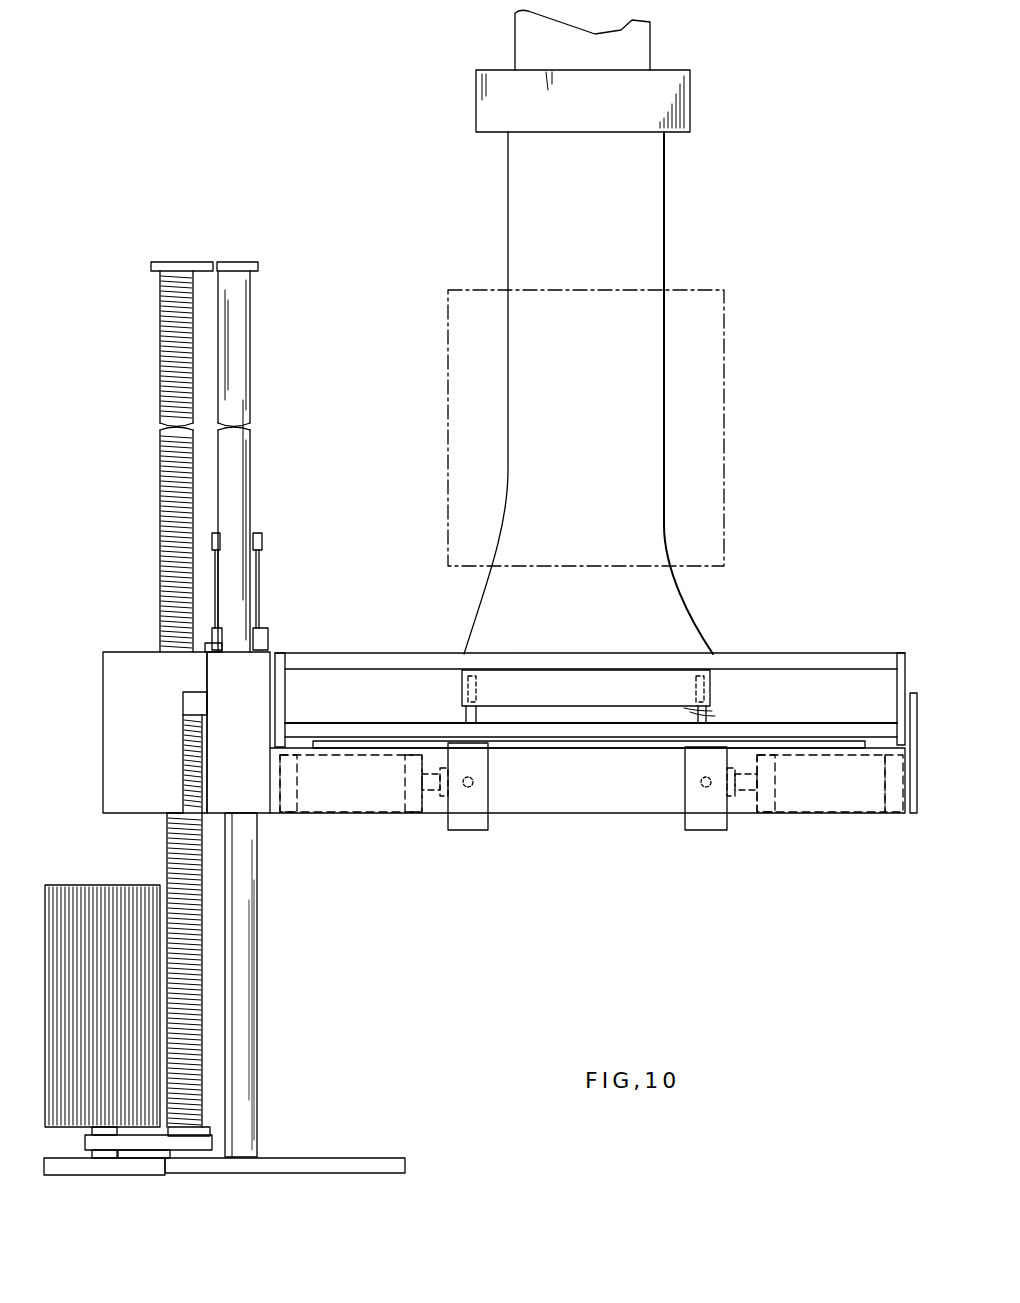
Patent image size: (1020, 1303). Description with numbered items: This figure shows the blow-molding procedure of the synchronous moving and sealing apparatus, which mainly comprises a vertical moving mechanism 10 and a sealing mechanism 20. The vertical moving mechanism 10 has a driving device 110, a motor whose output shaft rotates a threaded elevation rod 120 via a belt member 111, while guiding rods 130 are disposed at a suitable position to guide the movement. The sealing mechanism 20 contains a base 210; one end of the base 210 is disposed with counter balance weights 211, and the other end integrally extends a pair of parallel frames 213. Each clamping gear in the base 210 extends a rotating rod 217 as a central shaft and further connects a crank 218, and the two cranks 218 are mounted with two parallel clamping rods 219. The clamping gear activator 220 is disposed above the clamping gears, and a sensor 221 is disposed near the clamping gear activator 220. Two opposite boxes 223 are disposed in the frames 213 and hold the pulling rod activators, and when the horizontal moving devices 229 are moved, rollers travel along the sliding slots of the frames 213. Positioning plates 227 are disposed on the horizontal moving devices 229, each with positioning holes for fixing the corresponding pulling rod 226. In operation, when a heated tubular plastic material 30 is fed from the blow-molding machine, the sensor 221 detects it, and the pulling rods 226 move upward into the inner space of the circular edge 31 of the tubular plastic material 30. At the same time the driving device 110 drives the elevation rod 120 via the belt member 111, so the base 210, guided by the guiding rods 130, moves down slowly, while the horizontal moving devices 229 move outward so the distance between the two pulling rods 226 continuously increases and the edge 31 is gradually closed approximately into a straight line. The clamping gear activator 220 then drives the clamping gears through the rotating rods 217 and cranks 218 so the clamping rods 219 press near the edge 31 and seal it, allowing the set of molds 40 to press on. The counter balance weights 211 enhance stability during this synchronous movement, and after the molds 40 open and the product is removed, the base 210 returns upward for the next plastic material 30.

The vertical moving mechanism 10 is at (100, 825).
The sealing mechanism 20 is at (325, 618).
The tubular plastic material 30 is at (695, 598).
The circular edge 31 is at (712, 716).
The molds 40 is at (724, 382).
The driving device 110 is at (92, 910).
The belt member 111 is at (195, 1140).
The elevation rod 120 is at (190, 1043).
The guiding rods 130 is at (242, 975).
The base 210 is at (257, 795).
The counter balance weights 211 is at (117, 700).
The frames 213 is at (633, 797).
The rotating rod 217 is at (823, 730).
The crank 218 is at (897, 703).
The clamping rods 219 is at (452, 660).
The clamping gear activator 220 is at (262, 536).
The sensor 221 is at (270, 638).
The boxes 223 is at (468, 830).
The pulling rods 226 is at (718, 713).
The positioning plates 227 is at (375, 748).
The horizontal moving devices 229 is at (385, 790).